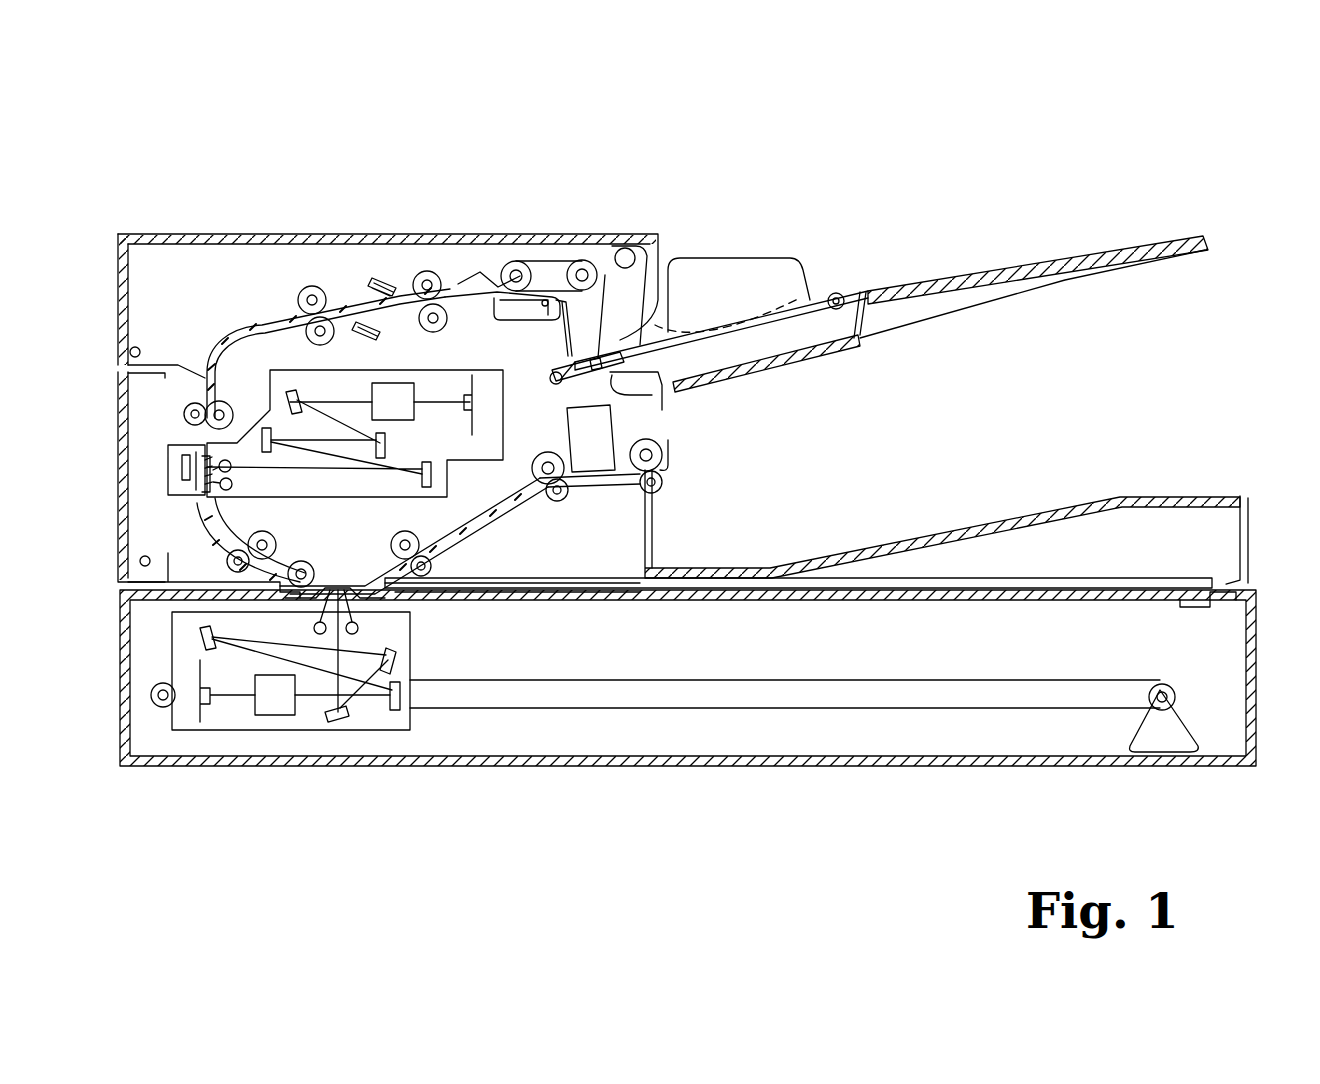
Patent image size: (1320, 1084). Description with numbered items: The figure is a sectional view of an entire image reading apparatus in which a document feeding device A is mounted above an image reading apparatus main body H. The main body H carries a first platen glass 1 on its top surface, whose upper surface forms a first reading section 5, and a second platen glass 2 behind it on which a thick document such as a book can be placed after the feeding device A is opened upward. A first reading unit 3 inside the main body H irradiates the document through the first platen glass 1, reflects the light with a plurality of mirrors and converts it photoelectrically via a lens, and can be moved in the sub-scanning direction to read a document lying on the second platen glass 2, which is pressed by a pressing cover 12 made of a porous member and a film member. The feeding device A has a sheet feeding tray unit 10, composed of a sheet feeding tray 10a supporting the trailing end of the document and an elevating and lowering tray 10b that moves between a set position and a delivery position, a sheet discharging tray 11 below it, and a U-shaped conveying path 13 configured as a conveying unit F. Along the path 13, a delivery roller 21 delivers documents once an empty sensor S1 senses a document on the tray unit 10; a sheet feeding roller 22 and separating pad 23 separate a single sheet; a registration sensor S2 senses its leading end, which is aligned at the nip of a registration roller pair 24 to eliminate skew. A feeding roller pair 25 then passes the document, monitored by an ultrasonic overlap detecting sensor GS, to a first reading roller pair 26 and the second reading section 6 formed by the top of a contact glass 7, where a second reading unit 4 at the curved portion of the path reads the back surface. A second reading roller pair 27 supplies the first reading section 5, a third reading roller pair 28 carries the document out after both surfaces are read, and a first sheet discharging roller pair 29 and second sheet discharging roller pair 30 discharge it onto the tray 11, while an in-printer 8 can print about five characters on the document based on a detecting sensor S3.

The conveying unit F is at (196, 200).
The document feeding device A is at (880, 232).
The image reading apparatus main body H is at (596, 772).
The first platen glass 1 is at (352, 598).
The second platen glass 2 is at (650, 600).
The first reading unit 3 is at (408, 657).
The second reading unit 4 is at (460, 370).
The first reading section 5 is at (340, 580).
The second reading section 6 is at (240, 485).
The contact glass 7 is at (216, 493).
The in-printer 8 is at (610, 462).
The sheet feeding tray unit 10 is at (1045, 256).
The sheet feeding tray 10a is at (946, 276).
The elevating and lowering tray 10b is at (784, 268).
The sheet discharging tray 11 is at (1020, 504).
The pressing cover 12 is at (1198, 588).
The U-shaped conveying path 13 is at (224, 336).
The delivery roller 21 is at (580, 260).
The sheet feeding roller 22 is at (515, 262).
The separating pad 23 is at (518, 320).
The registration roller pair 24 is at (415, 270).
The feeding roller pair 25 is at (300, 291).
The first reading roller pair 26 is at (184, 411).
The second reading roller pair 27 is at (227, 561).
The third reading roller pair 28 is at (432, 567).
The first sheet discharging roller pair 29 is at (556, 502).
The second sheet discharging roller pair 30 is at (662, 491).
The overlap detecting sensor GS is at (364, 280).
The empty sensor S1 is at (680, 338).
The registration sensor S2 is at (455, 282).
The detecting sensor S3 is at (577, 468).